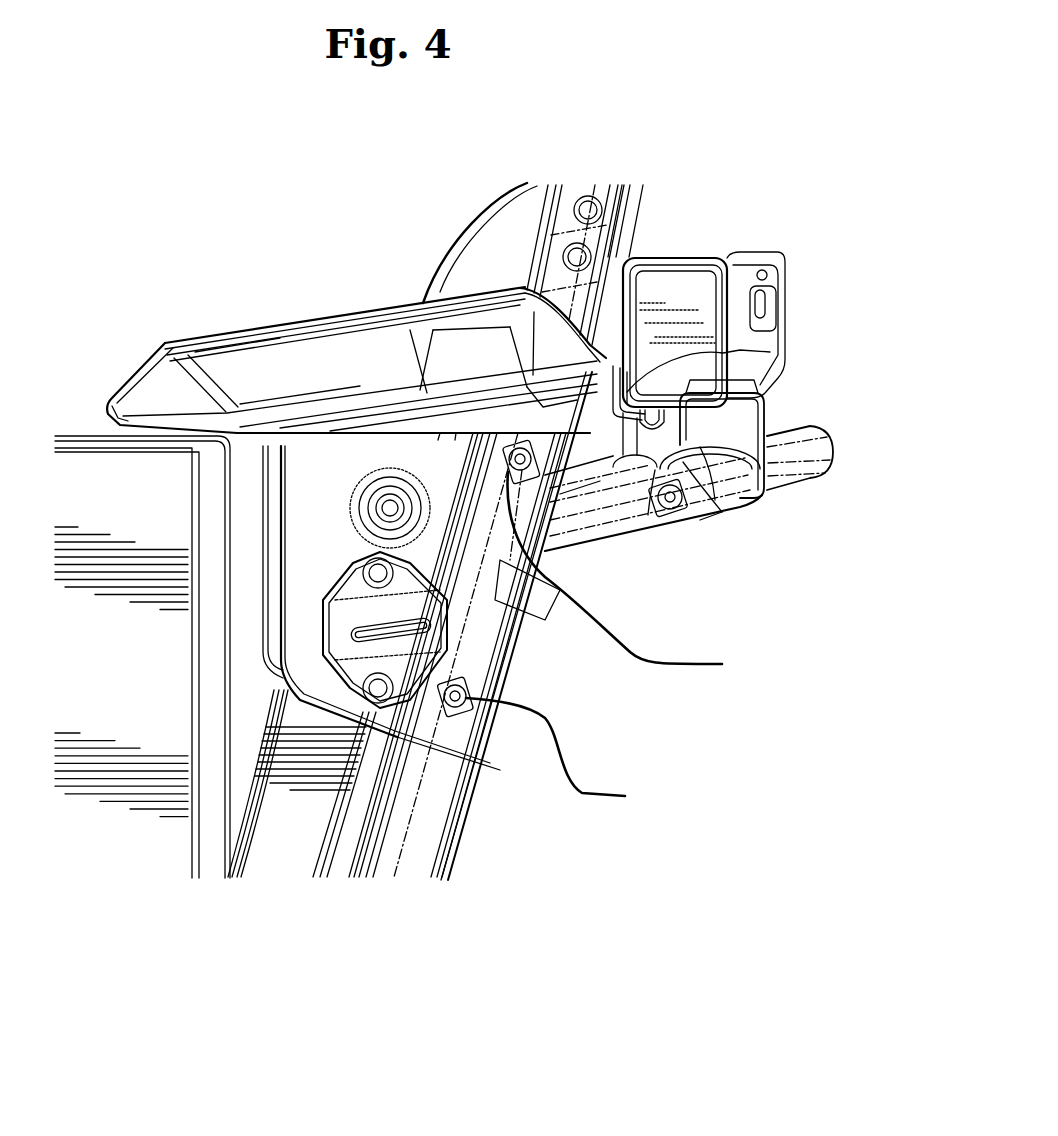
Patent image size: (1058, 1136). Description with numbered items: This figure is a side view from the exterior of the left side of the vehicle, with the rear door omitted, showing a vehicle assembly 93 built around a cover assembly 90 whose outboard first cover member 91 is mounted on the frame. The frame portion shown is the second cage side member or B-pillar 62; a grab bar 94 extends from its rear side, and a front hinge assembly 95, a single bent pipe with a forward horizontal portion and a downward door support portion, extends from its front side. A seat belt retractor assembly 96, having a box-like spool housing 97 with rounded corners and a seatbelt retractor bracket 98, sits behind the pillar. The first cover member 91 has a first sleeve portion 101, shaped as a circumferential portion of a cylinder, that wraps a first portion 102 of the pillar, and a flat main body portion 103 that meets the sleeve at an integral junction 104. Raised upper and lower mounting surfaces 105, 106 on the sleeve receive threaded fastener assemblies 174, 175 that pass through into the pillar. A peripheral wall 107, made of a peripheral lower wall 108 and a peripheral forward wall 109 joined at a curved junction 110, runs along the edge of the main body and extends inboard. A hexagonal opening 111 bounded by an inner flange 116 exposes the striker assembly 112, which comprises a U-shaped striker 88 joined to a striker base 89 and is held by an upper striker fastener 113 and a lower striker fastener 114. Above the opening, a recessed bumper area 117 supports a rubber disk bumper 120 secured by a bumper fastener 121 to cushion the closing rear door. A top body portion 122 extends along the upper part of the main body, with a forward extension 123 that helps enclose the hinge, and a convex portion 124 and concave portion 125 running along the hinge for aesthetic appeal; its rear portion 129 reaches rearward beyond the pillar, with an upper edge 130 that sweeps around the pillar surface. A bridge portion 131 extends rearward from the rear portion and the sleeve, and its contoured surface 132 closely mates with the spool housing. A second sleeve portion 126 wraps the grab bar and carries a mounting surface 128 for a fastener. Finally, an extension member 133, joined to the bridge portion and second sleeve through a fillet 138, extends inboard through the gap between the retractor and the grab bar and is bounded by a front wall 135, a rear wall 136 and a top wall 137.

The second cage side member 62 is at (395, 708).
The striker 88 is at (517, 650).
The striker base 89 is at (470, 710).
The cover assembly 90 is at (231, 332).
The first cover member 91 is at (207, 367).
The vehicle assembly 93 is at (482, 164).
The grab bar 94 is at (812, 470).
The front hinge assembly 95 is at (153, 433).
The seat belt retractor assembly 96 is at (670, 252).
The spool housing 97 is at (703, 280).
The seatbelt retractor bracket 98 is at (633, 228).
The first sleeve portion 101 is at (482, 745).
The first portion of the frame assembly 102 is at (530, 632).
The main body portion 103 is at (303, 355).
The integral junction 104 is at (463, 520).
The upper mounting surface 105 is at (560, 567).
The lower mounting surface 106 is at (530, 690).
The peripheral wall 107 is at (300, 712).
The peripheral lower wall 108 is at (333, 717).
The peripheral forward wall 109 is at (266, 648).
The junction 110 is at (283, 690).
The opening 111 is at (515, 600).
The striker assembly 112 is at (341, 598).
The upper striker fastener 113 is at (357, 570).
The lower striker fastener 114 is at (405, 745).
The inner flange 116 is at (408, 563).
The bumper area 117 is at (363, 497).
The bumper 120 is at (352, 498).
The bumper fastener 121 is at (368, 510).
The top body portion 122 is at (382, 268).
The forward extension 123 is at (170, 377).
The convex portion 124 is at (410, 357).
The concave portion 125 is at (318, 380).
The second sleeve portion 126 is at (715, 482).
The mounting surface 128 is at (657, 513).
The rear portion 129 is at (573, 353).
The upper edge 130 is at (610, 197).
The bridge portion 131 is at (603, 474).
The contoured surface 132 is at (742, 360).
The extension member 133 is at (706, 436).
The front wall 135 is at (703, 512).
The rear wall 136 is at (770, 413).
The top wall 137 is at (770, 383).
The fillet 138 is at (712, 460).
The threaded fastener assembly 174 is at (633, 574).
The threaded fastener assembly 175 is at (563, 752).